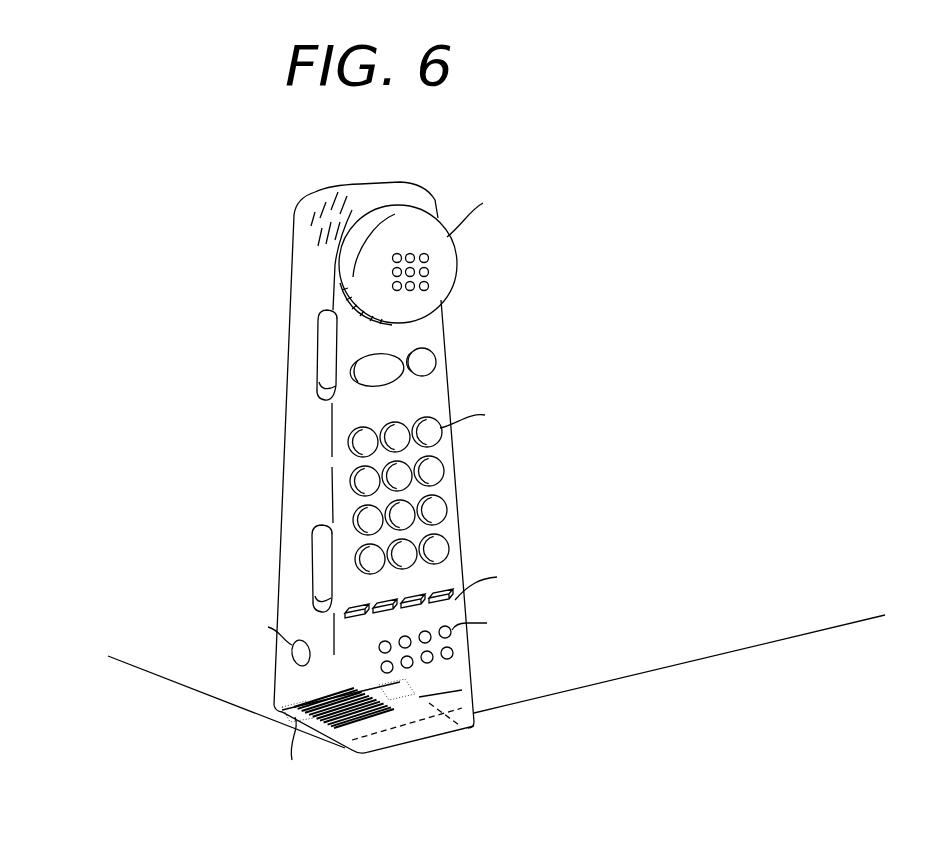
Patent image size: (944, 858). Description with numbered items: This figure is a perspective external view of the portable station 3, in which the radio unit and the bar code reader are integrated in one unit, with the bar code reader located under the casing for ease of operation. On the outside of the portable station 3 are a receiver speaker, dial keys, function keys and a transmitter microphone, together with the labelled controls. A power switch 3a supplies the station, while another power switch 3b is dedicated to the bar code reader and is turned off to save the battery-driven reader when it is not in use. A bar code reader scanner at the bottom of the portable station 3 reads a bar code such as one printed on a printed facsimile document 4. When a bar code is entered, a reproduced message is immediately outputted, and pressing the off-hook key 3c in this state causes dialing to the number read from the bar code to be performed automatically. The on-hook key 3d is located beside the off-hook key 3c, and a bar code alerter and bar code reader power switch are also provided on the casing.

The portable station 3 is at (370, 188).
The power switch 3a is at (322, 347).
The power switch 3b is at (325, 552).
The off-hook key 3c is at (432, 354).
The on-hook key 3d is at (378, 358).
The printed facsimile document 4 is at (705, 648).